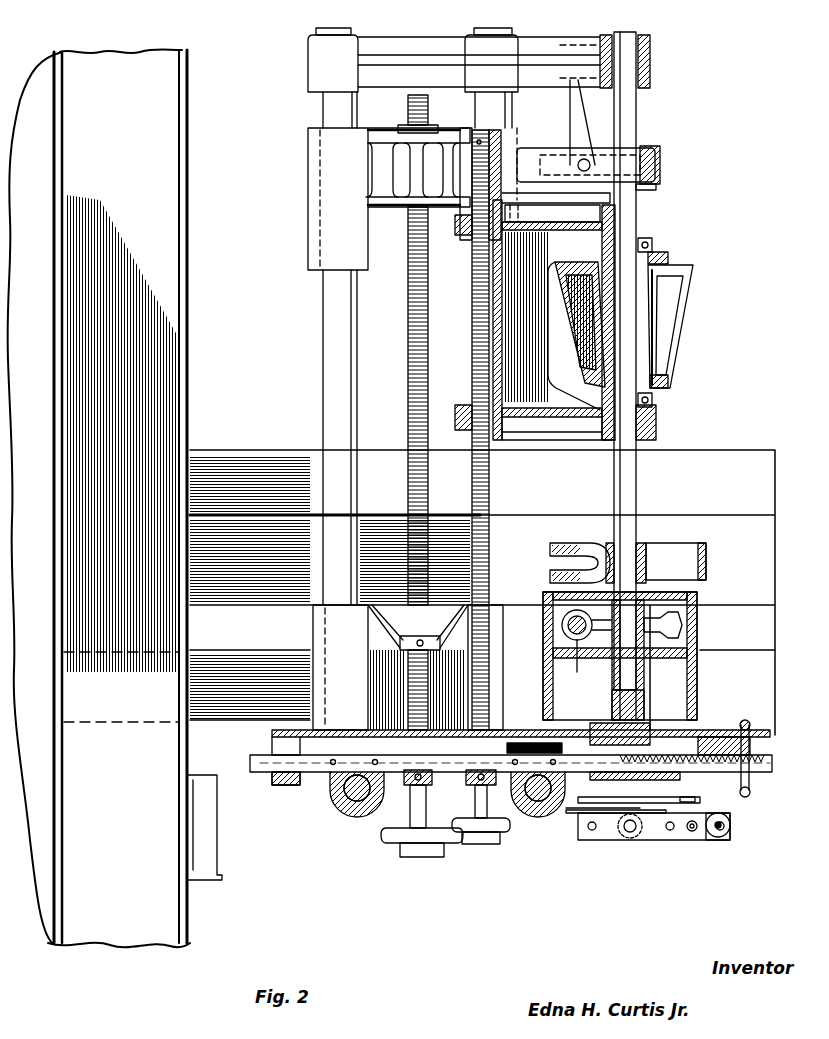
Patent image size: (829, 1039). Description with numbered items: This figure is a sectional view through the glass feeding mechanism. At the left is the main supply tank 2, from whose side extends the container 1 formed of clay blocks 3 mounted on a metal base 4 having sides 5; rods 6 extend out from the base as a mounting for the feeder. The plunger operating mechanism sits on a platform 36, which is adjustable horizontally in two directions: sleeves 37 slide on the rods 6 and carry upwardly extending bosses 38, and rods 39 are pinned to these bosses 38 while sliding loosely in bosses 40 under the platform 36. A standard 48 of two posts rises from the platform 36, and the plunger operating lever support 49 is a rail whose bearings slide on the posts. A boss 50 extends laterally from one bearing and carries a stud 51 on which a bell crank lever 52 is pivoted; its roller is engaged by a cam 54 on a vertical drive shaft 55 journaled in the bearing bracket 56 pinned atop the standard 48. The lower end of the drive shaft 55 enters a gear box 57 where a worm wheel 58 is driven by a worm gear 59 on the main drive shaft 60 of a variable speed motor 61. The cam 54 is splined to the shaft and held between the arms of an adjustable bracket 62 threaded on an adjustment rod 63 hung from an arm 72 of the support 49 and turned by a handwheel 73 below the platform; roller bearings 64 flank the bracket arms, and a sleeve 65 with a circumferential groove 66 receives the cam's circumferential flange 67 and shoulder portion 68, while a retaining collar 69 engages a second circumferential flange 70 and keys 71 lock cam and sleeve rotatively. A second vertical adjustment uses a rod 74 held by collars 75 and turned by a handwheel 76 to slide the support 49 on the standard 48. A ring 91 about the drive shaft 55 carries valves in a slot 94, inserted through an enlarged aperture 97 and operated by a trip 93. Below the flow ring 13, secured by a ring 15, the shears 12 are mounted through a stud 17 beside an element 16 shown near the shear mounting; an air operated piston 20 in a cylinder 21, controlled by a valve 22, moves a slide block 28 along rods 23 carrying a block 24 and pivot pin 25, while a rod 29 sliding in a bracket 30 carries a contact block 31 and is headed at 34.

The container 1 is at (397, 462).
The main supply tank 2 is at (40, 740).
The clay blocks 3 is at (222, 470).
The metal base 4 is at (203, 750).
The sides 5 is at (220, 672).
The rods 6 is at (345, 805).
The shears 12 is at (610, 812).
The flow ring 13 is at (585, 820).
The ring 15 is at (620, 760).
The pin 16 is at (749, 728).
The stud 17 is at (722, 740).
The air operated piston 20 is at (628, 840).
The cylinder 21 is at (645, 835).
The valve 22 is at (700, 840).
The rods 23 is at (670, 832).
The block 24 is at (600, 825).
The pivot pin 25 is at (640, 760).
The slide block 28 is at (680, 842).
The rod 29 is at (700, 822).
The bracket 30 is at (730, 825).
The contact block 31 is at (520, 805).
The head 34 is at (722, 817).
The platform 36 is at (328, 732).
The sleeves 37 is at (355, 800).
The bosses 38 is at (295, 780).
The rods 39 is at (262, 760).
The bosses 40 is at (545, 740).
The standard 48 is at (335, 352).
The plunger operating lever support 49 is at (322, 222).
The boss 50 is at (548, 160).
The stud 51 is at (660, 165).
The bell crank lever 52 is at (656, 187).
The cam 54 is at (683, 355).
The drive shaft 55 is at (620, 460).
The bearing bracket 56 is at (650, 62).
The gear box 57 is at (697, 690).
The worm wheel 58 is at (682, 625).
The worm gear 59 is at (592, 652).
The main drive shaft 60 is at (570, 615).
The variable speed motor 61 is at (652, 245).
The adjustable bracket 62 is at (555, 430).
The adjustment rod 63 is at (480, 505).
The roller bearings 64 is at (652, 400).
The sleeve 65 is at (660, 340).
The circumferential groove 66 is at (668, 385).
The circumferential flange 67 is at (588, 415).
The shoulder portion 68 is at (660, 390).
The retaining collar 69 is at (668, 262).
The second circumferential flange 70 is at (575, 275).
The keys 71 is at (428, 380).
The arm 72 is at (462, 150).
The handwheel 73 is at (463, 820).
The rod 74 is at (416, 785).
The collars 75 is at (400, 645).
The handwheel 76 is at (404, 845).
The ring 91 is at (680, 560).
The valve operating lever 93 is at (606, 560).
The slot 94 is at (560, 545).
The enlarged aperture 97 is at (618, 565).